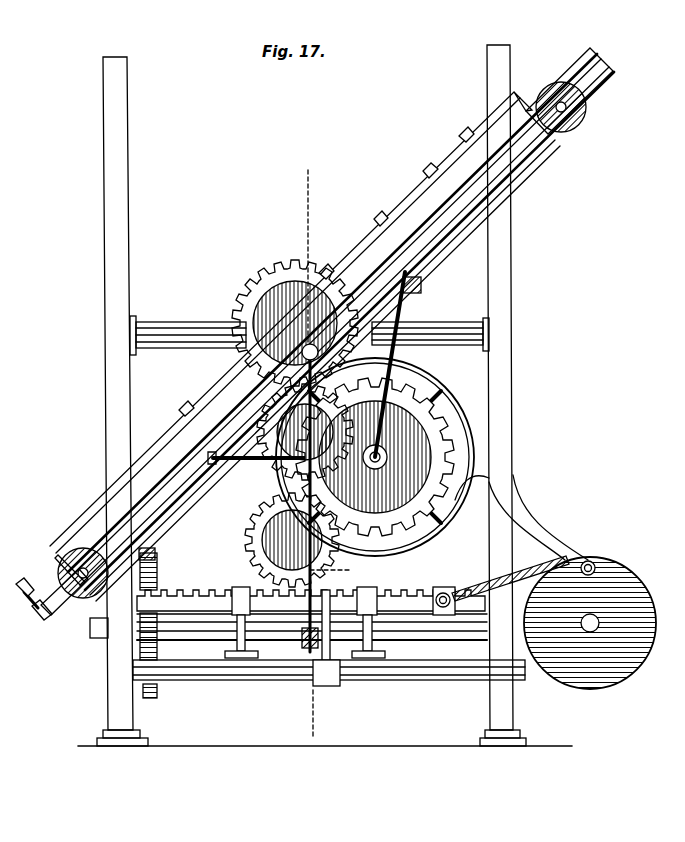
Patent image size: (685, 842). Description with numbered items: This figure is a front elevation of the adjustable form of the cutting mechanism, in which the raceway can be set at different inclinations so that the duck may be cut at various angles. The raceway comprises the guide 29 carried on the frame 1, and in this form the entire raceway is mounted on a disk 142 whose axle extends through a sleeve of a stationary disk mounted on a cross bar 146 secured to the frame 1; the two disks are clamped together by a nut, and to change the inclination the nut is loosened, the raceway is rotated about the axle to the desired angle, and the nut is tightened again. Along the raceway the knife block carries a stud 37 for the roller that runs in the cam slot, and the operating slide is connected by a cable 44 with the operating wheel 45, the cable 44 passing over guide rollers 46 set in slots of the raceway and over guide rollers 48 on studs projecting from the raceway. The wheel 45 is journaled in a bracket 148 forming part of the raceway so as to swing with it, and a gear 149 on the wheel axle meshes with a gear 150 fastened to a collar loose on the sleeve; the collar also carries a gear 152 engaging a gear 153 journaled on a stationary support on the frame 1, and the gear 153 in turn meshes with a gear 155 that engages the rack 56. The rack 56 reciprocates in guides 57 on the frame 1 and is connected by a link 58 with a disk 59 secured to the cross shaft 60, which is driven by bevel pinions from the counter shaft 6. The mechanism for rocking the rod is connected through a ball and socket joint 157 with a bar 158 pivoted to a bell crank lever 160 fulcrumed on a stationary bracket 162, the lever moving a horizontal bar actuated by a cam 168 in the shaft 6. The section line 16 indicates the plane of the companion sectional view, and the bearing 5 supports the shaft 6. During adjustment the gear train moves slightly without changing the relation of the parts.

The frame 1 is at (128, 253).
The bearing 5 is at (150, 700).
The counter shaft 6 is at (212, 662).
The section line 16 is at (317, 444).
The guide 29 is at (440, 248).
The stud 37 is at (22, 583).
The cable 44 is at (518, 180).
The operating wheel 45 is at (470, 392).
The guide rollers 46 is at (575, 122).
The guide rollers 48 is at (413, 293).
The rack 56 is at (177, 592).
The guides 57 is at (238, 587).
The link 58 is at (536, 530).
The disk 59 is at (590, 610).
The cross shaft 60 is at (598, 630).
The disk 142 is at (252, 308).
The cross bar 146 is at (176, 330).
The bracket 148 is at (392, 352).
The gear 149 is at (430, 525).
The gear 150 is at (282, 307).
The gear 152 is at (284, 262).
The gear 153 is at (275, 462).
The gear 155 is at (258, 530).
The ball and socket joint 157 is at (300, 355).
The bar 158 is at (350, 570).
The bell crank lever 160 is at (305, 645).
The stationary bracket 162 is at (315, 670).
The cam 168 is at (6, 630).